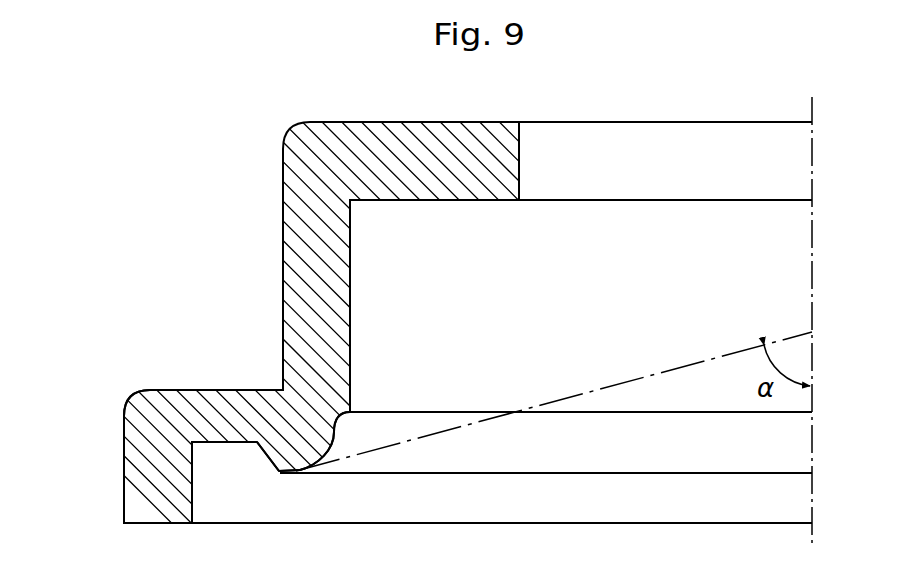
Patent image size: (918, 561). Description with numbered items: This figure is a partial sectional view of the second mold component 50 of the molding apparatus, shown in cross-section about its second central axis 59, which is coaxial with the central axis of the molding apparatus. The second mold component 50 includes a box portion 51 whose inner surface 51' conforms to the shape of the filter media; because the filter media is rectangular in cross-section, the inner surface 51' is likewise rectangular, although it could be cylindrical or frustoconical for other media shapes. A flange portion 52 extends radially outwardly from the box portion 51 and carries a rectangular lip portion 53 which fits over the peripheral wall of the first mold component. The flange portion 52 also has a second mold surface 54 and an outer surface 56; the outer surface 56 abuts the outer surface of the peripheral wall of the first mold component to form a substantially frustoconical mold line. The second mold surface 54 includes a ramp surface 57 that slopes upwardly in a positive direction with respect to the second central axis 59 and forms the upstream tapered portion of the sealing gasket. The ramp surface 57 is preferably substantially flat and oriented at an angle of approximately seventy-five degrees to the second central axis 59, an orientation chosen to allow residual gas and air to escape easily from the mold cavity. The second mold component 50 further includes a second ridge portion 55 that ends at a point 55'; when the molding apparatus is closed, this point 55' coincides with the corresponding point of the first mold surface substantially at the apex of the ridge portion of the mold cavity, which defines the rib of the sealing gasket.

The second mold component 50 is at (114, 466).
The box portion 51 is at (249, 269).
The inner surface 51' is at (389, 306).
The flange portion 52 is at (192, 398).
The rectangular lip portion 53 is at (132, 438).
The second mold surface 54 is at (348, 470).
The second ridge portion 55 is at (283, 493).
The point 55' is at (254, 479).
The outer surface 56 is at (265, 452).
The ramp surface 57 is at (305, 469).
The second central axis 59 is at (812, 262).